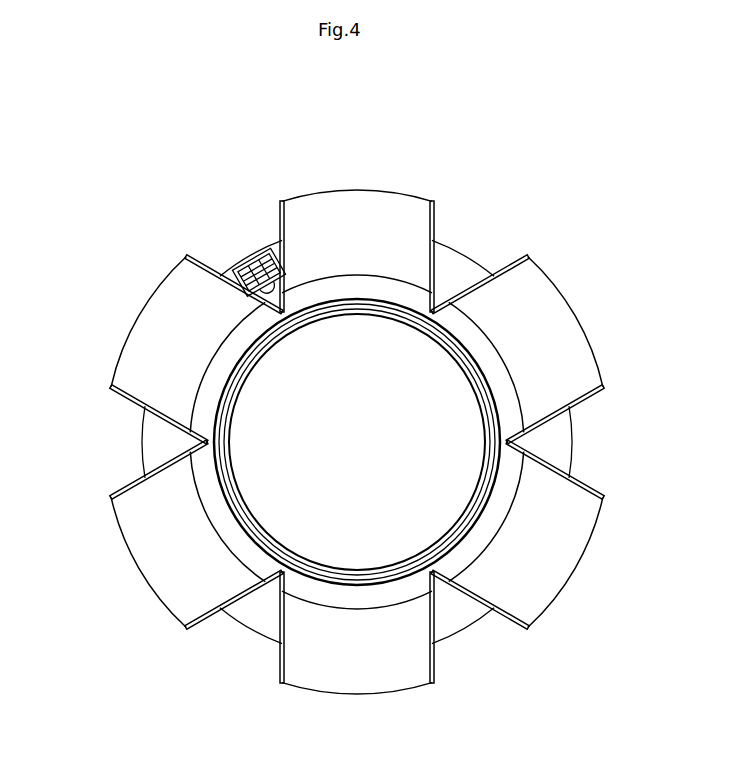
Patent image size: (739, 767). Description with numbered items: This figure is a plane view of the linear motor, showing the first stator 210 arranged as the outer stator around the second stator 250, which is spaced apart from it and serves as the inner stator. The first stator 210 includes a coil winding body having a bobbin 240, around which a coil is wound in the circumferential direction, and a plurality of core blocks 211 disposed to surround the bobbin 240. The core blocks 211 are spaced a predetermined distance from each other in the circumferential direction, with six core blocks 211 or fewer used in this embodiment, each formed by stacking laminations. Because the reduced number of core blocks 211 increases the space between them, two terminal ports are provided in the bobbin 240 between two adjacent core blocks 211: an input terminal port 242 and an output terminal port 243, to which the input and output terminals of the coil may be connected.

The first stator 210 is at (118, 234).
The core blocks 211 is at (357, 198).
The bobbin 240 is at (568, 457).
The input terminal port 242 is at (240, 262).
The output terminal port 243 is at (262, 292).
The second stator 250 is at (320, 563).